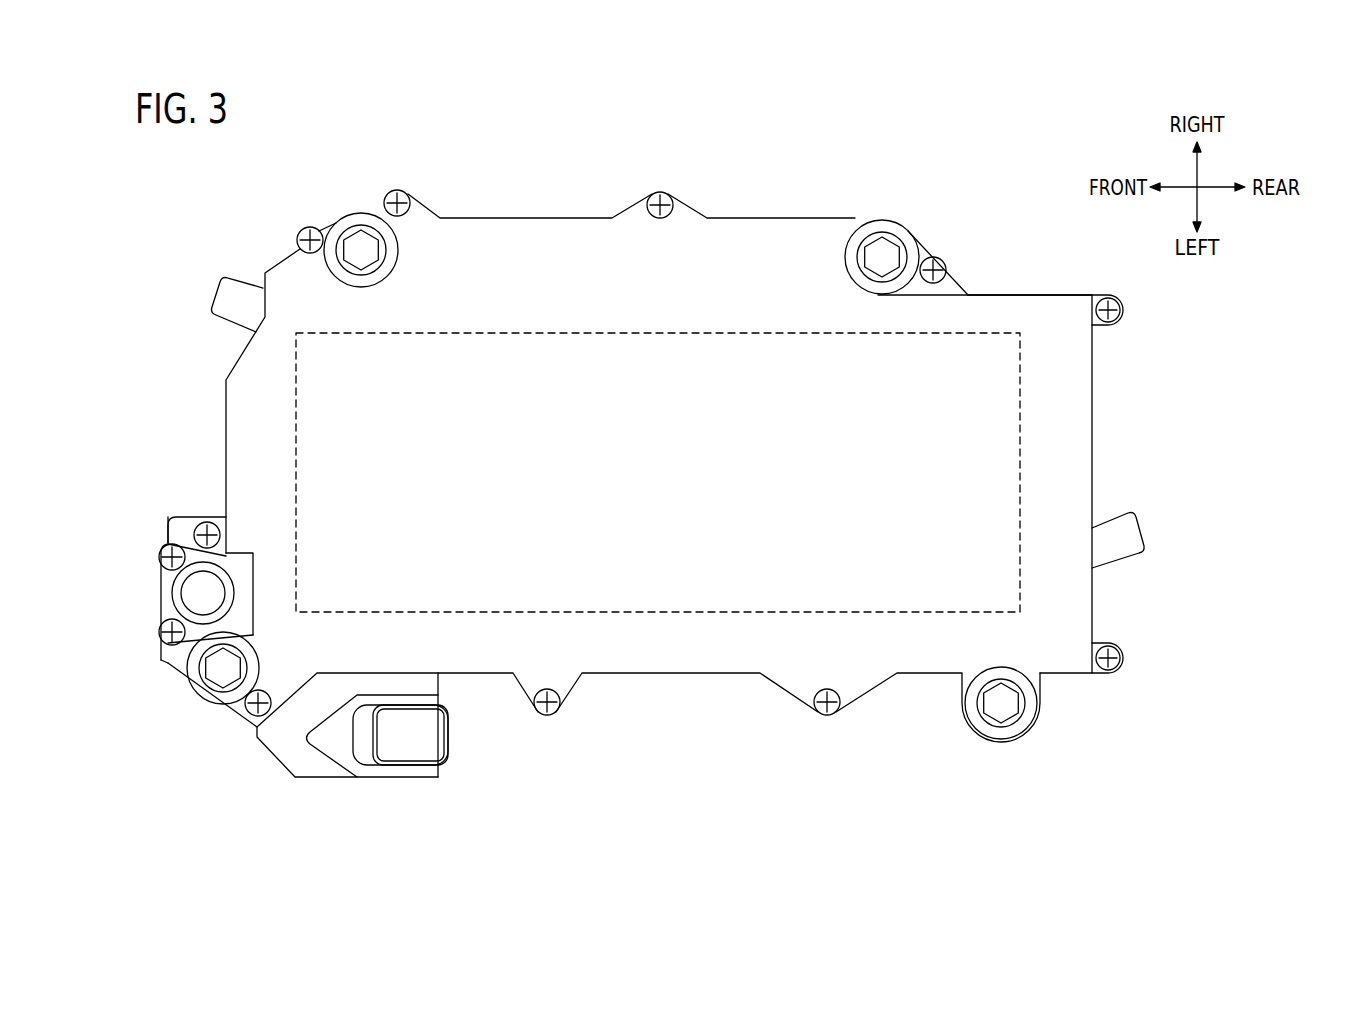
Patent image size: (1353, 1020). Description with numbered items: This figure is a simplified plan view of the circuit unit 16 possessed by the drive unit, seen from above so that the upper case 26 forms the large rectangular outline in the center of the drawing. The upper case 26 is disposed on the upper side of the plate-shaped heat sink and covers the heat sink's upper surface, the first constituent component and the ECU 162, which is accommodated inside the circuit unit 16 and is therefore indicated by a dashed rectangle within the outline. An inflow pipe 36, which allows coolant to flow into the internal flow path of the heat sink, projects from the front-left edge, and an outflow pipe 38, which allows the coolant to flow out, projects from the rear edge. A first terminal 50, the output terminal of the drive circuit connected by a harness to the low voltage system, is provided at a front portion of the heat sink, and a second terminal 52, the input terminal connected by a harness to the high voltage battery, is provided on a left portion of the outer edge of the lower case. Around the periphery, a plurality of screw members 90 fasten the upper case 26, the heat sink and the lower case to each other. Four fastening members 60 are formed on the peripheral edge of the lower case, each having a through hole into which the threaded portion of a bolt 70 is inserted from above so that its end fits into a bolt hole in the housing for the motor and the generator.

The circuit unit 16 is at (530, 144).
The upper case 26 is at (1008, 293).
The inflow pipe 36 is at (218, 292).
The outflow pipe 38 is at (1143, 528).
The first terminal 50 is at (175, 597).
The second terminal 52 is at (452, 744).
The fastening member 60 is at (362, 214).
The bolt 70 is at (352, 242).
The screw member 90 is at (297, 237).
The ECU 162 is at (576, 330).